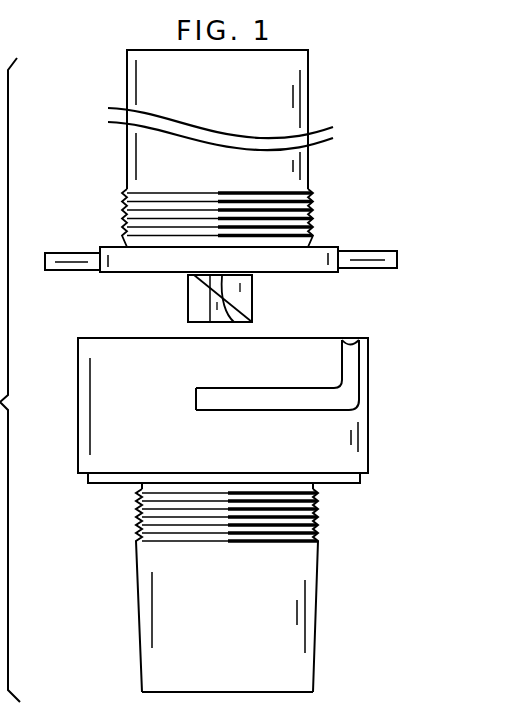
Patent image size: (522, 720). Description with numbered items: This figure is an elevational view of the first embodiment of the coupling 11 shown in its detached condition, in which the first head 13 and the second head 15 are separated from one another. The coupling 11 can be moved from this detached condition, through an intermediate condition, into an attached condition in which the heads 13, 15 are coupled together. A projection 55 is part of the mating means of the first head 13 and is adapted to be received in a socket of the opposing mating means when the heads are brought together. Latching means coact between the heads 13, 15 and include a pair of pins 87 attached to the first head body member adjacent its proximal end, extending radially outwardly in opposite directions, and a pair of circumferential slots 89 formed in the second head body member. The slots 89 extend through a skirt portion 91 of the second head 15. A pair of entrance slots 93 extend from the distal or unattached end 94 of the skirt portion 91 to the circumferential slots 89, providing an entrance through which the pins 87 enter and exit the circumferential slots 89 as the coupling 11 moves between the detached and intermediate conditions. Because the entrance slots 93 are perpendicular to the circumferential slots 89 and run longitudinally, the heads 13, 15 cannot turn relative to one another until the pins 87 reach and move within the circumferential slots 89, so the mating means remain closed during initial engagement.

The coupling 11 is at (440, 273).
The first head 13 is at (318, 167).
The second head 15 is at (229, 502).
The projection 55 is at (270, 303).
The pins 87 is at (58, 262).
The circumferential slots 89 is at (217, 397).
The skirt portion 91 is at (103, 371).
The entrance slots 93 is at (352, 340).
The unattached end 94 is at (103, 338).